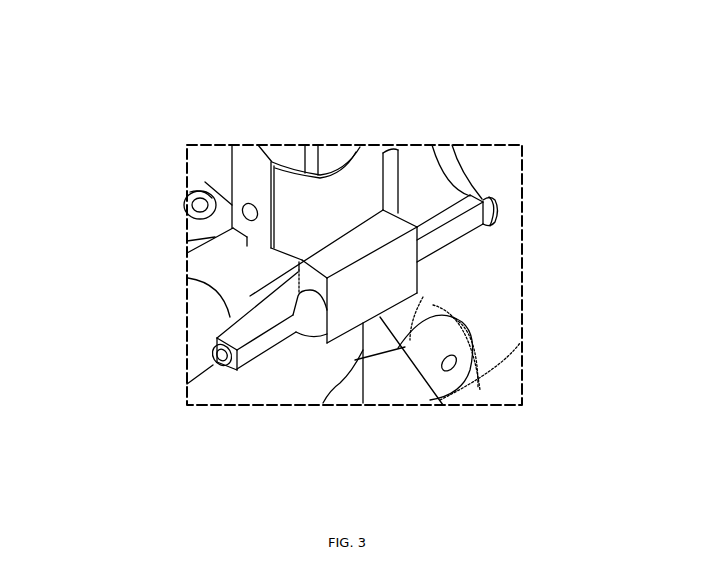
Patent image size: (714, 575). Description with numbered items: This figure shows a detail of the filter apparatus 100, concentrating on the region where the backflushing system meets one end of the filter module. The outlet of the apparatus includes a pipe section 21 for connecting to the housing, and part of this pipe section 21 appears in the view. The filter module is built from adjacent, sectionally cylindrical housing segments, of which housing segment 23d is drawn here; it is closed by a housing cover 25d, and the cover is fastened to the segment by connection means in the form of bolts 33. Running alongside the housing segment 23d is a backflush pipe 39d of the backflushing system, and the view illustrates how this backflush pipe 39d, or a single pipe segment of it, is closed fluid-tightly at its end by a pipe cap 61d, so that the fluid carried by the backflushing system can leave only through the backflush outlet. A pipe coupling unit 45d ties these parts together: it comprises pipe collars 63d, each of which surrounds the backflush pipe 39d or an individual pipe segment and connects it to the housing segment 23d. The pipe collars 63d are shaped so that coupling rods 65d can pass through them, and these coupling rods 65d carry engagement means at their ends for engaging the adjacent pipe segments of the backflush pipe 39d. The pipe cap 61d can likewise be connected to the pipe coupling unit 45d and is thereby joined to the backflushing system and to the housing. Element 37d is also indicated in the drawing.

The hinge assembly 100 is at (492, 113).
The pipe section 21 is at (477, 310).
The housing segment 23d is at (232, 380).
The housing cover 25d is at (205, 182).
The bolts 33 is at (498, 205).
The column 37d is at (290, 153).
The backflush pipe 39d is at (195, 302).
The pipe coupling unit 45d is at (467, 247).
The pipe cap 61d is at (457, 152).
The pipe collar 63d is at (398, 212).
The coupling rod 65d is at (262, 327).